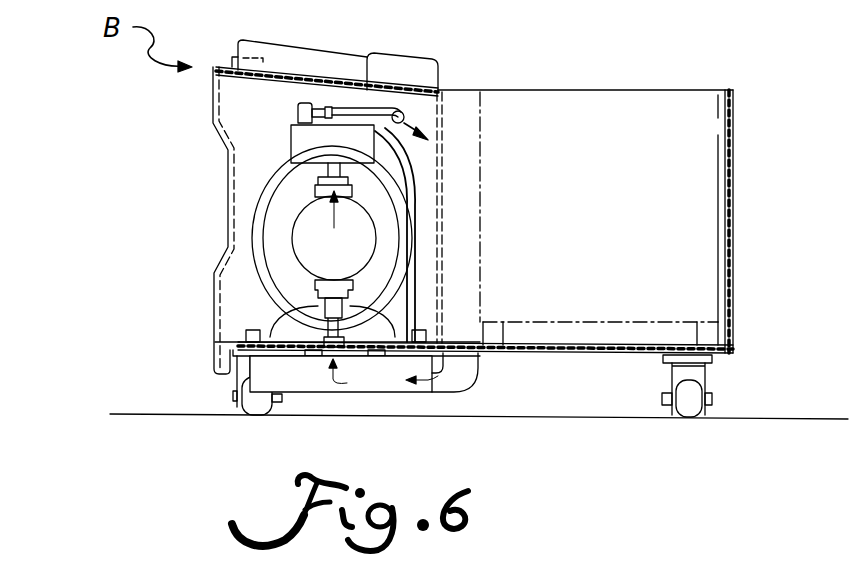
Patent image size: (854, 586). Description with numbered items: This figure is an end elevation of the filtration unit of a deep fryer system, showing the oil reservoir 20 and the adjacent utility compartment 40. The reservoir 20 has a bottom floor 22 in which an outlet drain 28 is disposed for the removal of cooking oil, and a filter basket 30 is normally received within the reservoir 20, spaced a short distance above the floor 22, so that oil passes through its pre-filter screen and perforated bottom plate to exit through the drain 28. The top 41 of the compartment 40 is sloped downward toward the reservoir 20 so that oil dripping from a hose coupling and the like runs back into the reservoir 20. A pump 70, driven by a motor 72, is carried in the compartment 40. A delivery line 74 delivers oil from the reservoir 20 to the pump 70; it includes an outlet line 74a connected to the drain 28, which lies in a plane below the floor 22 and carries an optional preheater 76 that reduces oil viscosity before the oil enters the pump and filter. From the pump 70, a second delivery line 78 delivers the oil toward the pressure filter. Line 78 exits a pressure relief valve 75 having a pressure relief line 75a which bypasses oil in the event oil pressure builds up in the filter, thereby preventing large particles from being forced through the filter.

The oil reservoir 20 is at (645, 102).
The bottom floor 22 is at (586, 344).
The outlet drain 28 is at (460, 344).
The filter basket 30 is at (483, 233).
The utility compartment 40 is at (236, 112).
The top of compartment 41 is at (307, 68).
The pump 70 is at (288, 152).
The motor 72 is at (252, 233).
The delivery line 74 is at (302, 325).
The outlet line 74a is at (480, 370).
The pressure relief valve 75 is at (292, 128).
The pressure relief line 75a is at (412, 188).
The preheater 76 is at (404, 392).
The second delivery line 78 is at (366, 57).